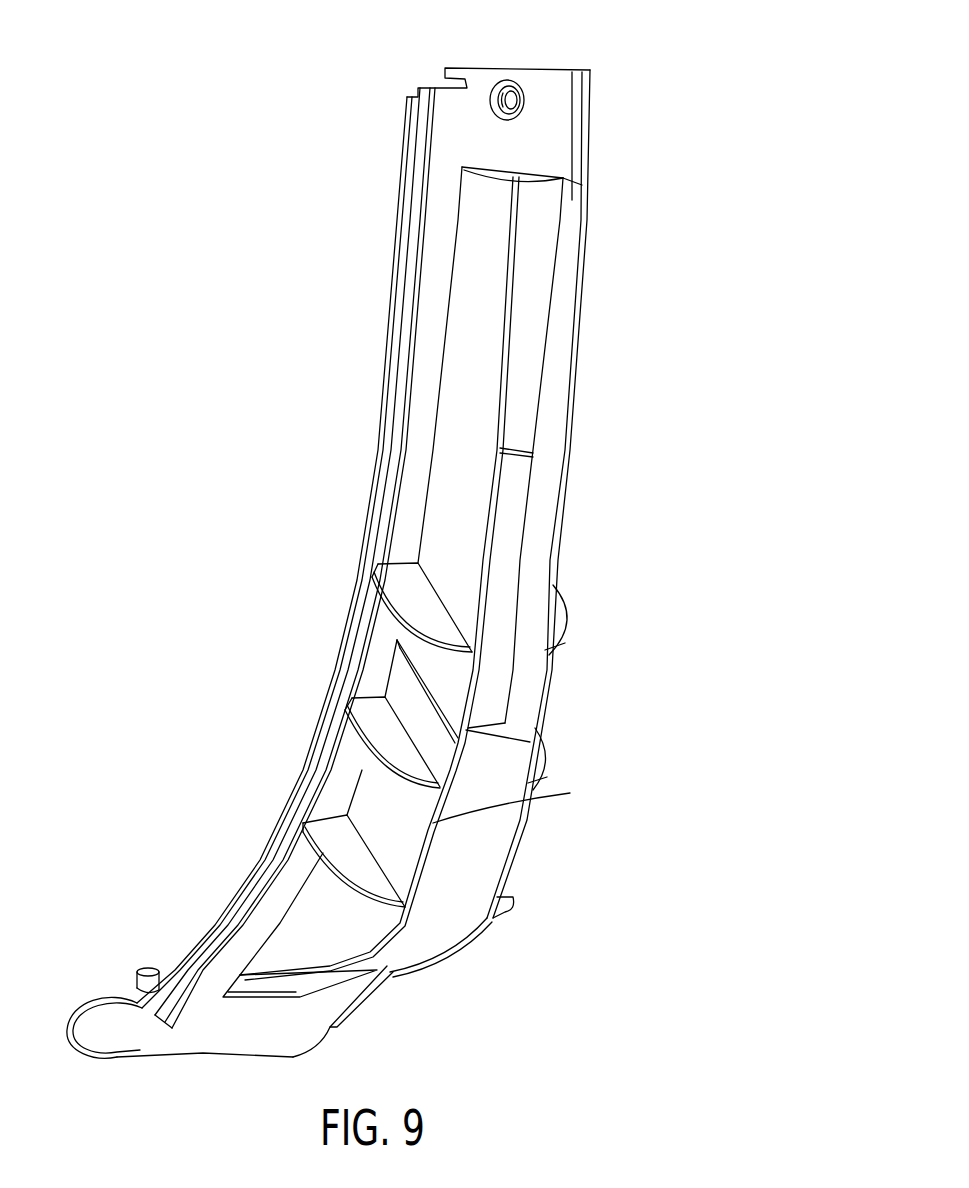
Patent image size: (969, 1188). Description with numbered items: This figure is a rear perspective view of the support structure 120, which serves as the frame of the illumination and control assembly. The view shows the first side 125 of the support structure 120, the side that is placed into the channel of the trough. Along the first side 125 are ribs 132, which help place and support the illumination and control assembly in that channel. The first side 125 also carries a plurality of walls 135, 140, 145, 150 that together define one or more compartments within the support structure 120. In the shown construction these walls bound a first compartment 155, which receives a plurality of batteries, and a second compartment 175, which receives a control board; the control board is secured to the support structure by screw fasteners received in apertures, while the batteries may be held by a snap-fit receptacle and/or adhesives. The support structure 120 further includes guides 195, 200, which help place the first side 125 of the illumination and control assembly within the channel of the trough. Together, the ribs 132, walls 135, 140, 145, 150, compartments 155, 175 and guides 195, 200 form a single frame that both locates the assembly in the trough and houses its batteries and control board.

The support structure 120 is at (498, 66).
The guide 200 is at (588, 125).
The first side 125 is at (438, 313).
The first compartment 155 is at (553, 335).
The wall 135 is at (510, 400).
The wall 140 is at (568, 458).
The ribs 132 is at (410, 592).
The wall 145 is at (433, 823).
The wall 150 is at (523, 818).
The second compartment 175 is at (482, 864).
The guide 195 is at (187, 988).